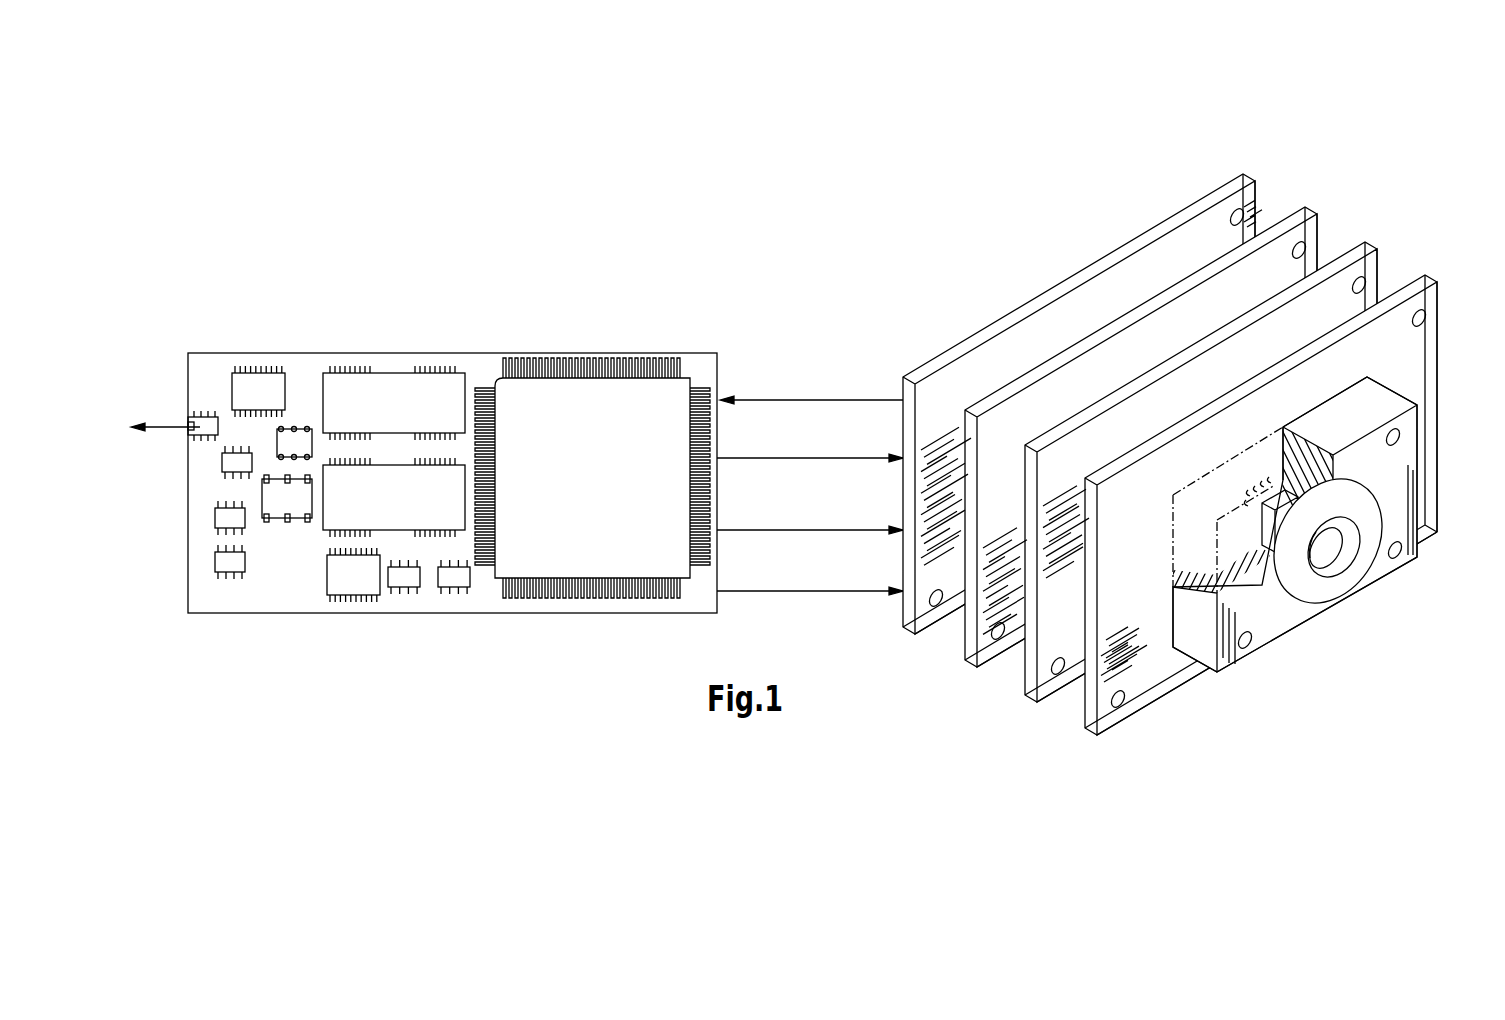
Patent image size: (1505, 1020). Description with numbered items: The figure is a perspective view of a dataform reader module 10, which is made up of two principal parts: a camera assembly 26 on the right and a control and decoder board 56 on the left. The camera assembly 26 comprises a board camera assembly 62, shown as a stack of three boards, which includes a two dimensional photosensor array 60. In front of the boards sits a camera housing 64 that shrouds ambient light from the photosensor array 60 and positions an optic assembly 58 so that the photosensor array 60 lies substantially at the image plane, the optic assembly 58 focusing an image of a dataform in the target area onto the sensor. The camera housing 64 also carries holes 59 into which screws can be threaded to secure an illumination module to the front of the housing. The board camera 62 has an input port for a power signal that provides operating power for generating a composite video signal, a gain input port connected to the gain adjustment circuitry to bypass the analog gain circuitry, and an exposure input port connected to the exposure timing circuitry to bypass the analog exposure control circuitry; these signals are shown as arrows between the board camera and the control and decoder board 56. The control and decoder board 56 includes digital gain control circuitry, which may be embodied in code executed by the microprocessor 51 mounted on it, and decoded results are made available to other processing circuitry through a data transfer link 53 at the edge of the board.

The dataform reader module 10 is at (818, 393).
The camera assembly 26 is at (1204, 434).
The microprocessor 51 is at (582, 405).
The data transfer link 53 is at (166, 423).
The control and decoder board 56 is at (424, 440).
The optic assembly 58 is at (1353, 533).
The holes 59 is at (1398, 436).
The two dimensional photosensor array 60 is at (1268, 512).
The board camera assembly 62 is at (1050, 437).
The camera housing 64 is at (1310, 524).